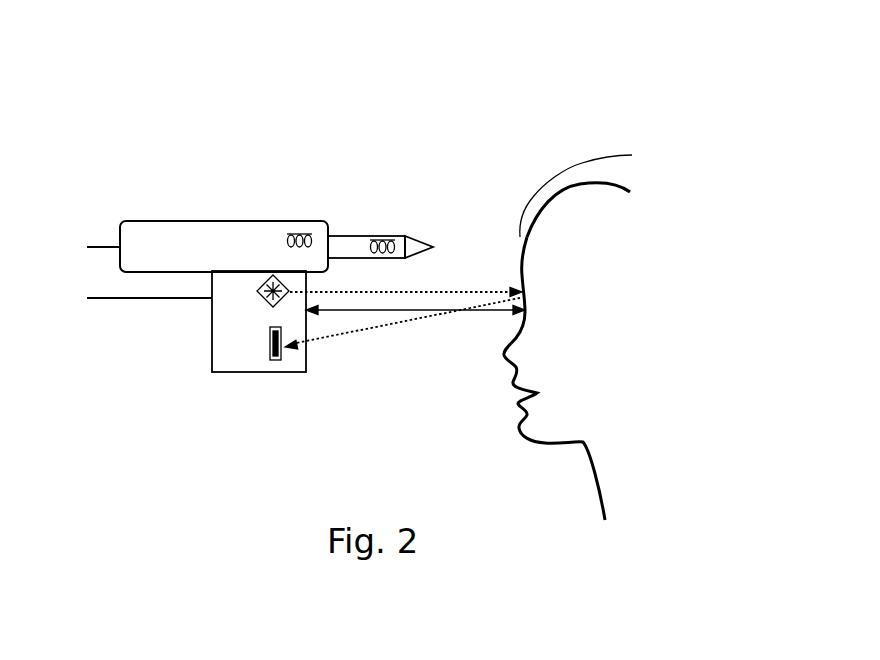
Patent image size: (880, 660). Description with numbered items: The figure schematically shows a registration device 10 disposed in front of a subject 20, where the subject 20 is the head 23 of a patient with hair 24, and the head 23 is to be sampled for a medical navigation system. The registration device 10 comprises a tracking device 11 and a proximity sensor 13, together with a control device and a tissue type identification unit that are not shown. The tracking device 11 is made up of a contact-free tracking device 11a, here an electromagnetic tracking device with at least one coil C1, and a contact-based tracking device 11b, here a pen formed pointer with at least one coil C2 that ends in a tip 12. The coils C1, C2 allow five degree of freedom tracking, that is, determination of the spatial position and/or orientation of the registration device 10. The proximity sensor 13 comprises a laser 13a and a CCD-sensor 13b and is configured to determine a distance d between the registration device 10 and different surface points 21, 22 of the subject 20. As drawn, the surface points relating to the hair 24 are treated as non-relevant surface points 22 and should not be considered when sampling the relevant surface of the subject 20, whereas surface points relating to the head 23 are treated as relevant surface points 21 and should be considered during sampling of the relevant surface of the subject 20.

The registration device 10 is at (190, 203).
The tracking device 11 is at (305, 171).
The contact-free tracking device 11a is at (210, 220).
The contact-based tracking device 11b is at (352, 234).
The coil C1 is at (303, 233).
The coil C2 is at (388, 239).
The tip 12 is at (433, 247).
The proximity sensor 13 is at (205, 373).
The laser 13a is at (268, 299).
The CCD-sensor 13b is at (278, 362).
The distance d is at (405, 326).
The subject 20 is at (569, 287).
The relevant surface points 21 is at (507, 321).
The non-relevant surface points 22 is at (511, 200).
The head 23 is at (623, 190).
The hair 24 is at (582, 163).